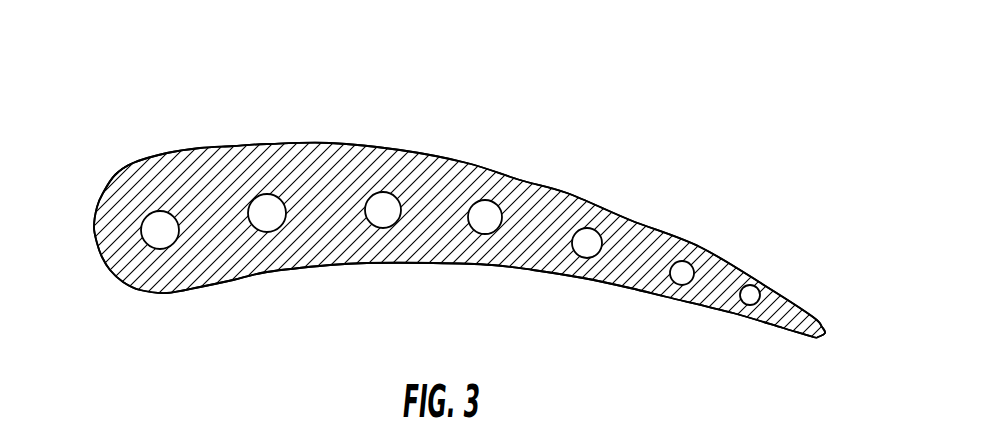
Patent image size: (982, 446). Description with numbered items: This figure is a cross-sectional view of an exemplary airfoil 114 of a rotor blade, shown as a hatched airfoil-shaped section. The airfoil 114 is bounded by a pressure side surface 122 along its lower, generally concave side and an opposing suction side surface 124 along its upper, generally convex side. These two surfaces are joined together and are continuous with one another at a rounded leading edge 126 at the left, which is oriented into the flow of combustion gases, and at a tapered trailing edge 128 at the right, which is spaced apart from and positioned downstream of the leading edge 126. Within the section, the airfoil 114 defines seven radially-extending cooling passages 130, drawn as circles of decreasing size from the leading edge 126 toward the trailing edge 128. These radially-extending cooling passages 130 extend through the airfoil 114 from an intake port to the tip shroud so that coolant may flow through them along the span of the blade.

The airfoil 114 is at (90, 110).
The pressure side surface 122 is at (492, 265).
The suction side surface 124 is at (355, 143).
The leading edge 126 is at (94, 248).
The trailing edge 128 is at (827, 335).
The radially-extending cooling passages 130 is at (163, 211).